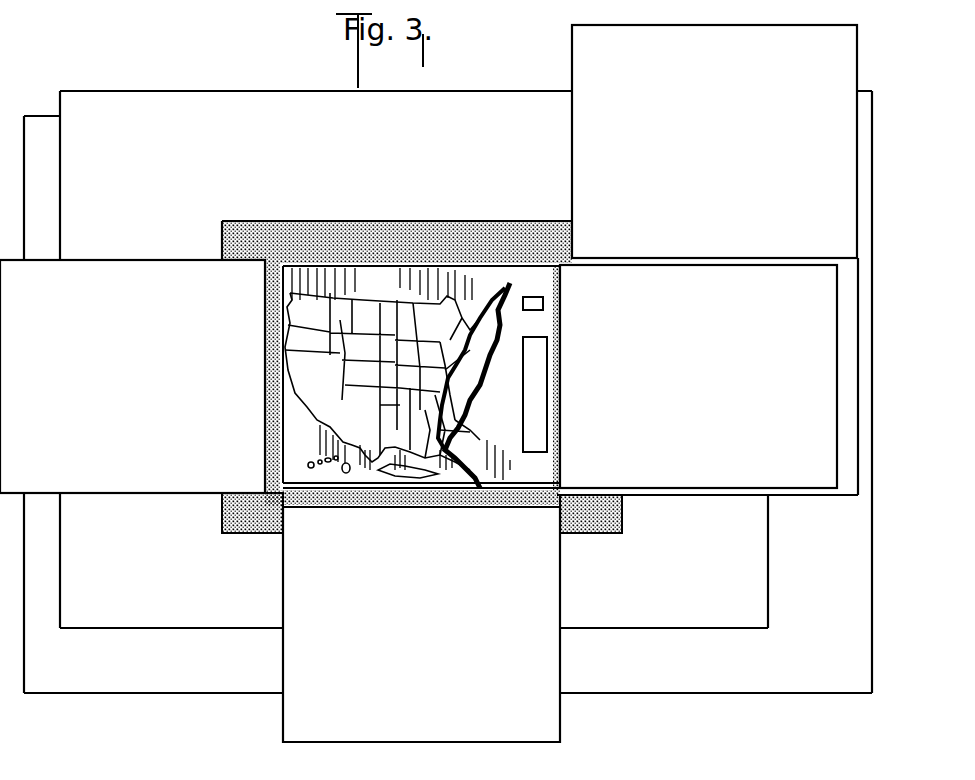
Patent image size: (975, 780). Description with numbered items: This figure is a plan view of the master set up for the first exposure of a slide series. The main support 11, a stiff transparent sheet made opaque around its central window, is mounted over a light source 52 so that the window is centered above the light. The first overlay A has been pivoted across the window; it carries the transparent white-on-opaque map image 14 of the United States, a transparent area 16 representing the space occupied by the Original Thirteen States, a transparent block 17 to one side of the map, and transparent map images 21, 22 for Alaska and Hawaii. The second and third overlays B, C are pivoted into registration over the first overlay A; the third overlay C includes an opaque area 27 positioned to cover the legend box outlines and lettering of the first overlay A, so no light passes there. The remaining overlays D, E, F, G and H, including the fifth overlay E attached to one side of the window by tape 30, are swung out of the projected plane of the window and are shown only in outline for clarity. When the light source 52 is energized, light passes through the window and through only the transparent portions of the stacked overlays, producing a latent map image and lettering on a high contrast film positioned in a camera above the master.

The main support 11 is at (156, 103).
The light source 52 is at (41, 122).
The map image 14 is at (276, 228).
The block 17 is at (538, 295).
The opaque area 27 is at (546, 411).
The area representing the Original Thirteen States 16 is at (474, 395).
The map image of Hawaii 22 is at (322, 453).
The map image of Alaska 21 is at (428, 472).
The tape 30 is at (243, 533).
The overlay G is at (585, 67).
The fifth overlay E is at (133, 280).
The overlay D is at (792, 493).
The overlay F is at (853, 490).
The overlay H is at (560, 718).
The first overlay A is at (473, 497).
The second overlay B is at (470, 266).
The third overlay C is at (402, 266).